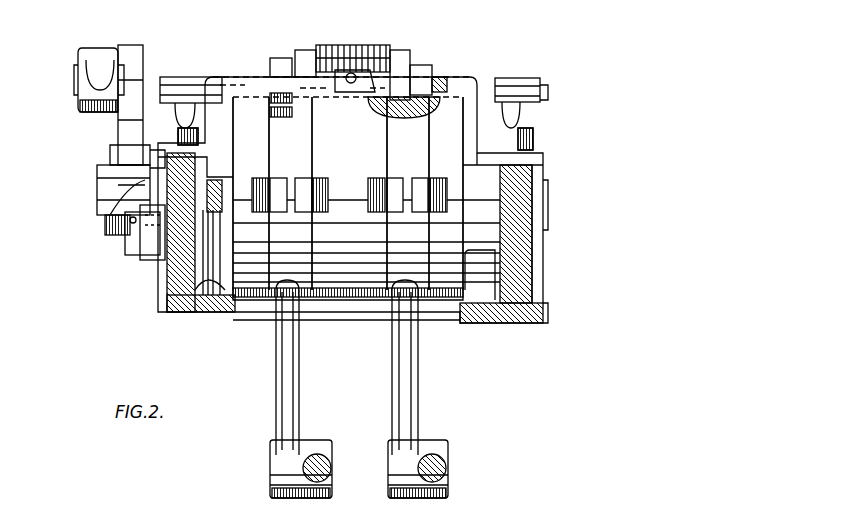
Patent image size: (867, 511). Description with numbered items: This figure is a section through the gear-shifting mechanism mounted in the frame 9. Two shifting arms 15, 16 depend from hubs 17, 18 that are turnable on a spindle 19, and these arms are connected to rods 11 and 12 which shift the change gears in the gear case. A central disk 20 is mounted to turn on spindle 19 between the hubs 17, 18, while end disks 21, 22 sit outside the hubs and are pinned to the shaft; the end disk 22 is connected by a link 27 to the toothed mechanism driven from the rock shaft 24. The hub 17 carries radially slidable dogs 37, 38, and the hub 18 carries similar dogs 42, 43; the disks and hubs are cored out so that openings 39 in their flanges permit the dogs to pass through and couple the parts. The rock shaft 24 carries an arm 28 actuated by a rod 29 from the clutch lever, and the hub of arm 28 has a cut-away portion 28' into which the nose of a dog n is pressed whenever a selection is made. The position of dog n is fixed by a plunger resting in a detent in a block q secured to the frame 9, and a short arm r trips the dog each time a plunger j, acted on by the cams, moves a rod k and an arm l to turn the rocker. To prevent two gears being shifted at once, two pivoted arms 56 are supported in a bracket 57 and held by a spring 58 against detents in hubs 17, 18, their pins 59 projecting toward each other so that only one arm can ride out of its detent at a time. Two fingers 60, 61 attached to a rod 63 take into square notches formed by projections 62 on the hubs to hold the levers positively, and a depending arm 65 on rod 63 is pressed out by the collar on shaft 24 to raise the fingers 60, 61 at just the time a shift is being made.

The frame 9 is at (520, 305).
The rod 11 is at (330, 468).
The rod 12 is at (446, 468).
The arm 15 is at (290, 388).
The arm 16 is at (410, 393).
The hub 17 is at (290, 193).
The hub 18 is at (408, 193).
The spindle 19 is at (548, 205).
The central disk 20 is at (366, 193).
The end disk 21 is at (251, 193).
The end disk 22 is at (446, 193).
The rock shaft 24 is at (97, 178).
The link 27 is at (480, 268).
The arm 28 is at (137, 90).
The cut-away portion 28' is at (96, 197).
The rod 29 is at (103, 48).
The dog 37 is at (279, 184).
The dog 38 is at (302, 184).
The opening 39 is at (366, 184).
The dog 42 is at (422, 184).
The dog 43 is at (398, 184).
The pivoted arm 56 is at (298, 55).
The bracket 57 is at (475, 80).
The spring 58 is at (378, 55).
The pin 59 is at (362, 48).
The finger 60 is at (272, 62).
The finger 61 is at (428, 72).
The projection 62 is at (270, 110).
The rod 63 is at (500, 98).
The depending arm 65 is at (215, 108).
The dog n is at (108, 220).
The short arm r is at (126, 248).
The block q is at (150, 238).
The arm l is at (190, 311).
The rod k is at (214, 300).
The plunger j is at (225, 215).